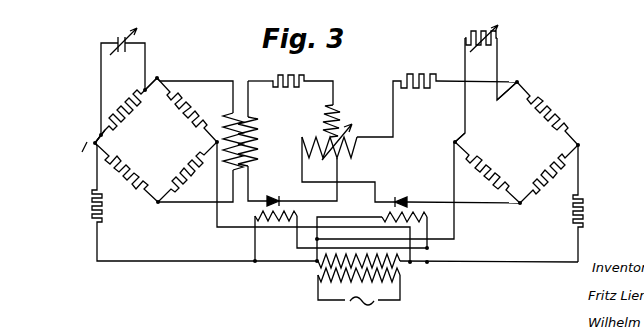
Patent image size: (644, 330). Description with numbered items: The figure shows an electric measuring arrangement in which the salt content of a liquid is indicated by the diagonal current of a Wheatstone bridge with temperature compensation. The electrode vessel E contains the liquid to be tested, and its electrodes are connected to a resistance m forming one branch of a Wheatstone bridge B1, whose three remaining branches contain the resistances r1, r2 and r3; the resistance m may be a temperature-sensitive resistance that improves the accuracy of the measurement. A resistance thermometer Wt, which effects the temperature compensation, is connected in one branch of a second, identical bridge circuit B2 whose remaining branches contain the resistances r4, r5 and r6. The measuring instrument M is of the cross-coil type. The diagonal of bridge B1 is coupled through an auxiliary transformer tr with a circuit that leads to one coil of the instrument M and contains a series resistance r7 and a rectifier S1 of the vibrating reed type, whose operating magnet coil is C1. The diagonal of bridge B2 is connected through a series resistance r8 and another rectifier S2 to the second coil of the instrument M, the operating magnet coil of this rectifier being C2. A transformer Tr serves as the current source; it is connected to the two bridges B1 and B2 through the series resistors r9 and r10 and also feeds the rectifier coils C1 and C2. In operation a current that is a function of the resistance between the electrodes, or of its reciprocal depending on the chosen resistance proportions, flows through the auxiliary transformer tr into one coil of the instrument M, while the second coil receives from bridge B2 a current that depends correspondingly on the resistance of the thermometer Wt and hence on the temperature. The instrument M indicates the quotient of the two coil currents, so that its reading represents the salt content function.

The electrode vessel E is at (120, 78).
The resistance m is at (126, 110).
The Wheatstone bridge B1 is at (129, 115).
The resistance r1 is at (125, 180).
The resistance r2 is at (192, 192).
The resistance r3 is at (190, 105).
The series resistor r10 is at (92, 208).
The auxiliary transformer tr is at (255, 140).
The series resistance r7 is at (288, 72).
The measuring instrument M is at (329, 129).
The rectifier S1 is at (281, 190).
The rectifier S2 is at (396, 200).
The operating magnet coil C1 is at (278, 222).
The operating magnet coil C2 is at (414, 220).
The transformer Tr is at (372, 271).
The series resistance r8 is at (418, 74).
The resistance thermometer Wt is at (484, 78).
The second bridge circuit B2 is at (490, 118).
The resistance r4 is at (492, 182).
The resistance r5 is at (553, 185).
The resistance r6 is at (563, 115).
The series resistor r9 is at (585, 214).